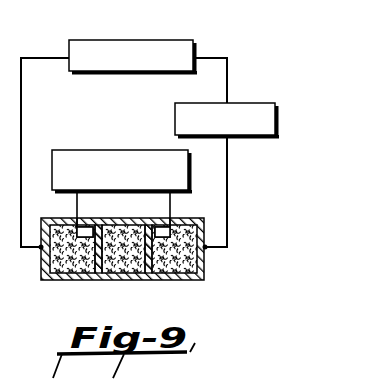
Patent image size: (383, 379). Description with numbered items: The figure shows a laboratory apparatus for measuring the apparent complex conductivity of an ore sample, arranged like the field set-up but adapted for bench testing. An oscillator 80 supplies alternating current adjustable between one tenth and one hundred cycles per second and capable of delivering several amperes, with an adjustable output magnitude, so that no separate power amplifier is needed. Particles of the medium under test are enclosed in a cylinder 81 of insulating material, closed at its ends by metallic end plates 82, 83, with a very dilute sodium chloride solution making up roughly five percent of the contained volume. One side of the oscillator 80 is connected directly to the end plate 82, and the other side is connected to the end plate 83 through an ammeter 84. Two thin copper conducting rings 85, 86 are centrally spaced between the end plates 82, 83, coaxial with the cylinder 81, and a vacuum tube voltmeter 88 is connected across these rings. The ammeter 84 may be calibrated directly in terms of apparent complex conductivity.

The oscillator 80 is at (75, 75).
The ammeter 84 is at (254, 103).
The vacuum tube voltmeter 88 is at (138, 148).
The cylinder 81 is at (107, 280).
The metallic end plate 82 is at (41, 266).
The metallic end plate 83 is at (205, 265).
The conducting ring 85 is at (97, 262).
The conducting ring 86 is at (150, 262).